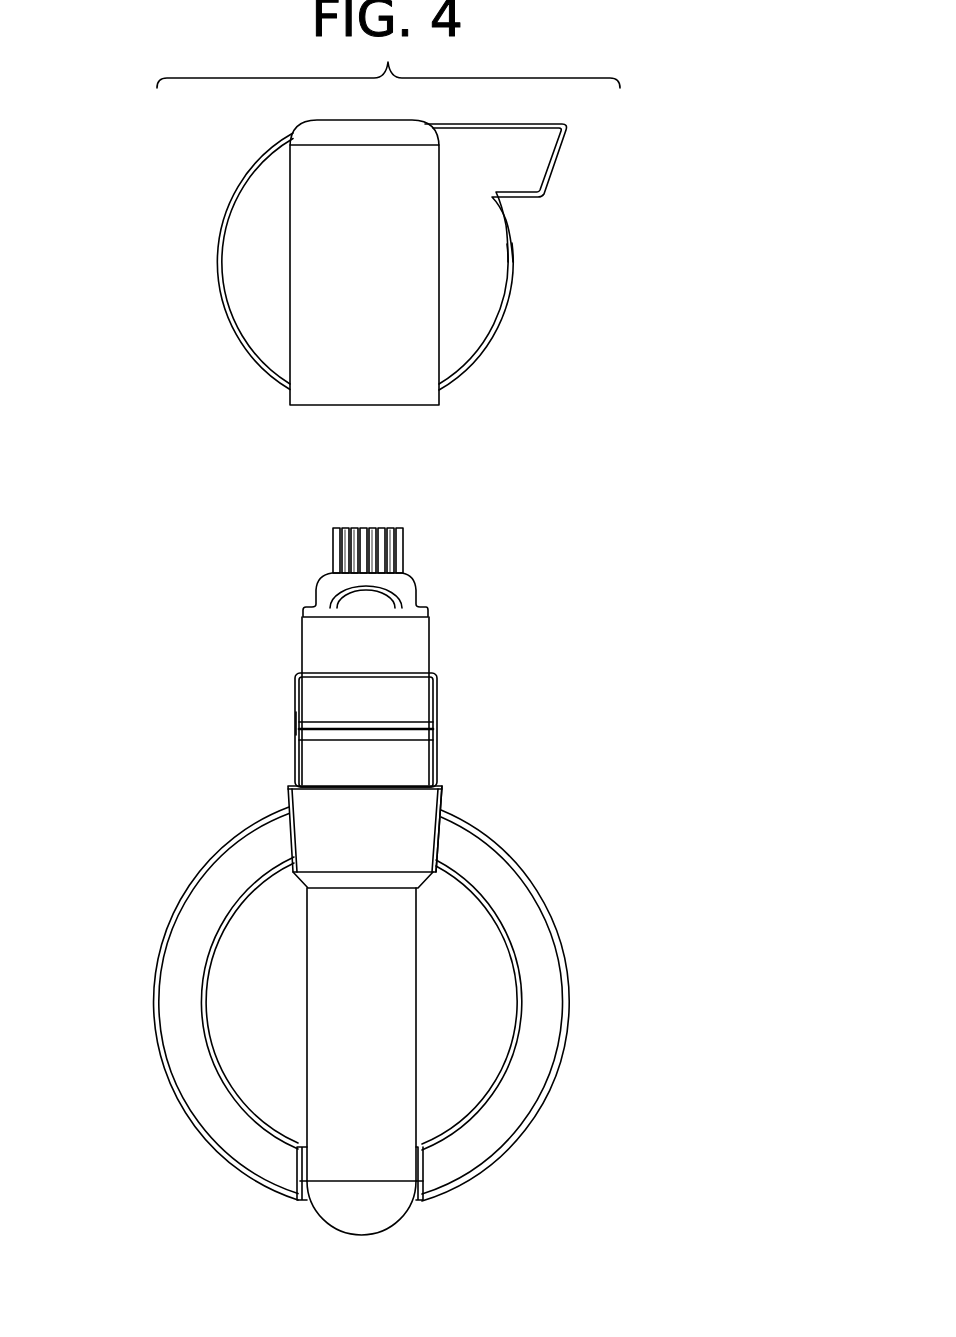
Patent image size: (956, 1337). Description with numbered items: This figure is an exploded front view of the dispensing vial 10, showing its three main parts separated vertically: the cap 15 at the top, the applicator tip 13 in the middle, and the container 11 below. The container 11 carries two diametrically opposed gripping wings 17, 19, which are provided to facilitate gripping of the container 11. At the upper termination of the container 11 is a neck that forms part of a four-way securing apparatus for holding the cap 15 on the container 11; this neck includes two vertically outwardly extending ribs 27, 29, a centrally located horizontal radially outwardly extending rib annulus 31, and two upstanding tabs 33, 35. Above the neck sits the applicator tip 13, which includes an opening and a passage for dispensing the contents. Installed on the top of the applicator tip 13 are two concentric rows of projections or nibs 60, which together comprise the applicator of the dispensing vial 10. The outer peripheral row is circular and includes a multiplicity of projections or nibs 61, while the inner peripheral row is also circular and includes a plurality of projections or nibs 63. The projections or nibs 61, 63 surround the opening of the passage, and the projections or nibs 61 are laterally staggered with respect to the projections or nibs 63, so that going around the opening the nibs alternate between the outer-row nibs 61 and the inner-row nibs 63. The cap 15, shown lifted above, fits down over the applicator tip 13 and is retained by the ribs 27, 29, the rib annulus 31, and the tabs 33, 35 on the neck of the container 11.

The dispensing vial 10 is at (232, 543).
The container 11 is at (140, 866).
The applicator tip 13 is at (455, 604).
The cap 15 is at (160, 255).
The gripping wing 17 is at (175, 982).
The gripping wing 19 is at (553, 1025).
The vertically outwardly extending rib 27 is at (295, 709).
The vertically outwardly extending rib 29 is at (371, 710).
The rib annulus 31 is at (334, 725).
The upstanding tab 33 is at (291, 784).
The upstanding tab 35 is at (440, 782).
The projections or nibs 60 is at (390, 530).
The outer row projections or nibs 61 is at (334, 544).
The inner row projections or nibs 63 is at (320, 508).